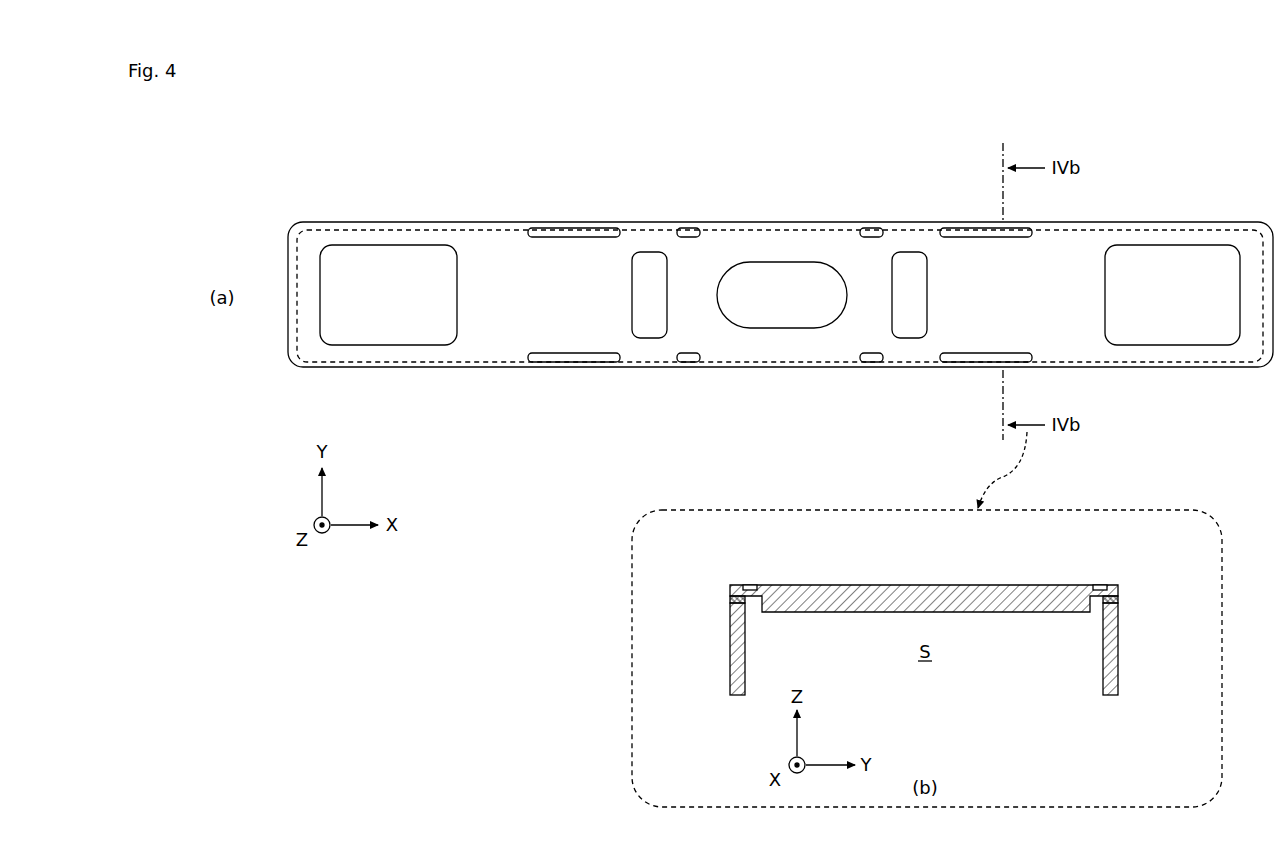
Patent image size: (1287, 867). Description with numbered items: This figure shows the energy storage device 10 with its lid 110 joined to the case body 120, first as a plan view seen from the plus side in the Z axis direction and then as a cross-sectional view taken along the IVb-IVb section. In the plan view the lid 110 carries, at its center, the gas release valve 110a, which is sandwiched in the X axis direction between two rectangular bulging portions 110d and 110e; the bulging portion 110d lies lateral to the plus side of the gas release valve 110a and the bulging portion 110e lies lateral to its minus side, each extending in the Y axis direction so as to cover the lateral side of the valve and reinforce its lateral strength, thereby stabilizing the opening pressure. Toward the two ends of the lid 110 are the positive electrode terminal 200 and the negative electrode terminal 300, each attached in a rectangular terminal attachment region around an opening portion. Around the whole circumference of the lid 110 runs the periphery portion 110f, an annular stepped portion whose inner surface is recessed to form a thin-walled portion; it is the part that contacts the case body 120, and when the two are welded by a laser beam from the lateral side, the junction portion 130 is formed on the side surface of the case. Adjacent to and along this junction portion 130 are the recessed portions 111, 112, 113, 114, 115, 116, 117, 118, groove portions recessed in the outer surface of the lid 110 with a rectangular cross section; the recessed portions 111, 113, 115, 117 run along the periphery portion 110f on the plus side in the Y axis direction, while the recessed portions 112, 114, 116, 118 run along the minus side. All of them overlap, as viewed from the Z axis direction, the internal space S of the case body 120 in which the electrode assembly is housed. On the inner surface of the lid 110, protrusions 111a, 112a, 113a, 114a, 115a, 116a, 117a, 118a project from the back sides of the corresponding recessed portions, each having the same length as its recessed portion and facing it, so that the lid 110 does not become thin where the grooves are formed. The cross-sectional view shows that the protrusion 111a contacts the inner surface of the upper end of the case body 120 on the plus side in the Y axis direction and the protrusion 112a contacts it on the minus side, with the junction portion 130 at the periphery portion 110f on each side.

The energy storage device 10 is at (1125, 148).
The lid 110 is at (470, 207).
The gas release valve 110a is at (782, 262).
The bulging portion 110d is at (910, 252).
The bulging portion 110e is at (647, 252).
The periphery portion 110f is at (1157, 366).
The recessed portion 111 is at (985, 237).
The protrusion 111a is at (980, 226).
The recessed portion 112 is at (985, 353).
The protrusion 112a is at (980, 365).
The recessed portion 113 is at (575, 237).
The protrusion 113a is at (572, 226).
The recessed portion 114 is at (575, 353).
The protrusion 114a is at (570, 365).
The recessed portion 115 is at (876, 226).
The protrusion 115a is at (868, 226).
The recessed portion 116 is at (873, 365).
The protrusion 116a is at (866, 365).
The recessed portion 117 is at (694, 226).
The protrusion 117a is at (683, 226).
The recessed portion 118 is at (693, 365).
The protrusion 118a is at (683, 365).
The case body 120 is at (1137, 225).
The junction portion 130 is at (765, 365).
The positive electrode terminal 200 is at (1172, 245).
The negative electrode terminal 300 is at (388, 245).